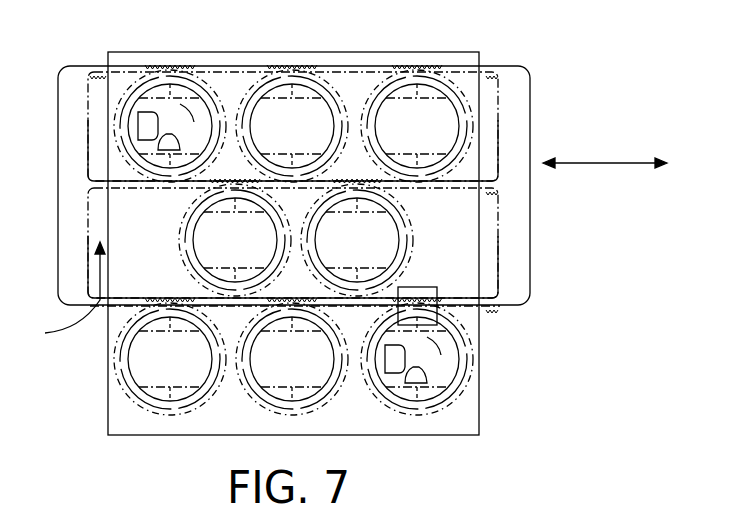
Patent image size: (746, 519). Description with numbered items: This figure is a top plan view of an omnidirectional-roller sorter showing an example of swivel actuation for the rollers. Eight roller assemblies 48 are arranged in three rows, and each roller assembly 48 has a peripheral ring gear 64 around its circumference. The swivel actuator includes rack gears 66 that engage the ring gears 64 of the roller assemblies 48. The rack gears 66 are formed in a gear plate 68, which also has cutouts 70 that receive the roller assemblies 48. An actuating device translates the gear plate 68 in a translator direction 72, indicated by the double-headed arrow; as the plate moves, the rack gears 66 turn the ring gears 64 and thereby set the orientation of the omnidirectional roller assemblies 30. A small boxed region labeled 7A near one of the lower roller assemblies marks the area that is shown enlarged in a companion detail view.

The omnidirectional roller assembly 30 is at (127, 362).
The roller assembly 48 is at (133, 98).
The peripheral ring gear 64 is at (440, 82).
The rack gear 66 is at (318, 77).
The gear plate 68 is at (530, 252).
The cutout 70 is at (61, 293).
The translator direction 72 is at (606, 162).
The detail region 7A is at (437, 302).